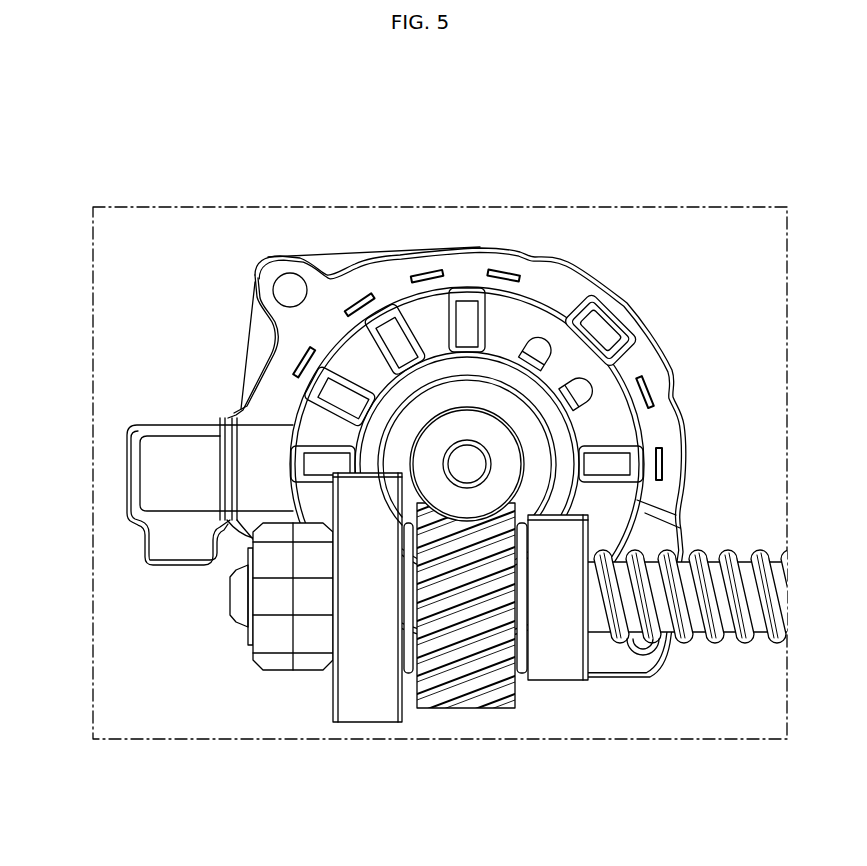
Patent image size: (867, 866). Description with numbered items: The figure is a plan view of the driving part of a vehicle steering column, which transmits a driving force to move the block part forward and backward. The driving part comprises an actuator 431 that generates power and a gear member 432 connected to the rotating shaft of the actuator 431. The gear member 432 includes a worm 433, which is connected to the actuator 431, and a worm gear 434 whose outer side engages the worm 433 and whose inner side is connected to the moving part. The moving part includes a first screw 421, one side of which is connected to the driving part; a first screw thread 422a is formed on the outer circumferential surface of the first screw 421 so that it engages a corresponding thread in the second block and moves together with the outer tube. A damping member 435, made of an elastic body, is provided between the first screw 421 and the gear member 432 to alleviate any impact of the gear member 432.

The first screw 421 is at (713, 643).
The first screw thread 422a is at (669, 603).
The actuator 431 is at (268, 383).
The gear member 432 is at (463, 134).
The worm 433 is at (472, 427).
The worm gear 434 is at (510, 527).
The damping member 435 is at (404, 673).